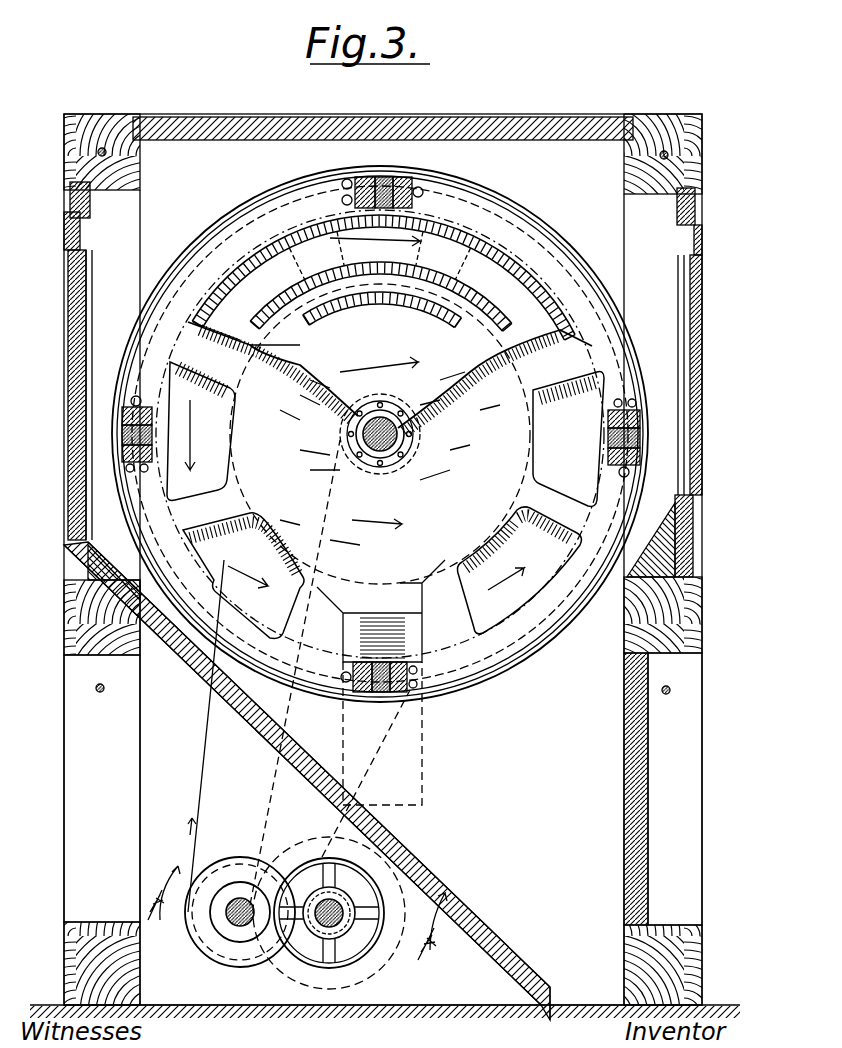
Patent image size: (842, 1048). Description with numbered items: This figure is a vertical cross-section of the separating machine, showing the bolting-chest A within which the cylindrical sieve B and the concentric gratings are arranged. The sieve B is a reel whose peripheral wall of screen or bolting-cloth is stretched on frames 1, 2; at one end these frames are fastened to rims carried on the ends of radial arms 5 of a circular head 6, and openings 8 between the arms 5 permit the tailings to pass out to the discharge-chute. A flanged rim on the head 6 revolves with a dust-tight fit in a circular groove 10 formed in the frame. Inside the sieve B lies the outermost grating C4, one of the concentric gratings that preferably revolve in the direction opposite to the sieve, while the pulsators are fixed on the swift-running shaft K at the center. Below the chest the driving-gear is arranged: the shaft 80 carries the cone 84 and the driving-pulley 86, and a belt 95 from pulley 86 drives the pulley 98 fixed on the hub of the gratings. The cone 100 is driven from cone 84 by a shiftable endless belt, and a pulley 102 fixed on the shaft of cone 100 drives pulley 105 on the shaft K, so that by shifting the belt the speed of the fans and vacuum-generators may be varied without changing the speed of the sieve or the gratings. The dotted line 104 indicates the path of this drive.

The bolting-chest A is at (548, 128).
The sieve B is at (515, 268).
The frame 1 is at (383, 264).
The frame 2 is at (386, 182).
The circular groove 10 is at (492, 196).
The grating C4 is at (258, 262).
The swift-running shaft K is at (405, 450).
The pulley 105 is at (412, 434).
The pulley 98 is at (254, 506).
The radial arm 5 is at (385, 442).
The circular head 6 is at (388, 413).
The opening 8 is at (382, 573).
The belt 95 is at (206, 795).
The chute shaft line 104 is at (284, 782).
The cone 84 is at (242, 872).
The driving-pulley 86 is at (217, 958).
The shaft 80 is at (250, 925).
The cone 100 is at (370, 866).
The pulley 102 is at (329, 913).